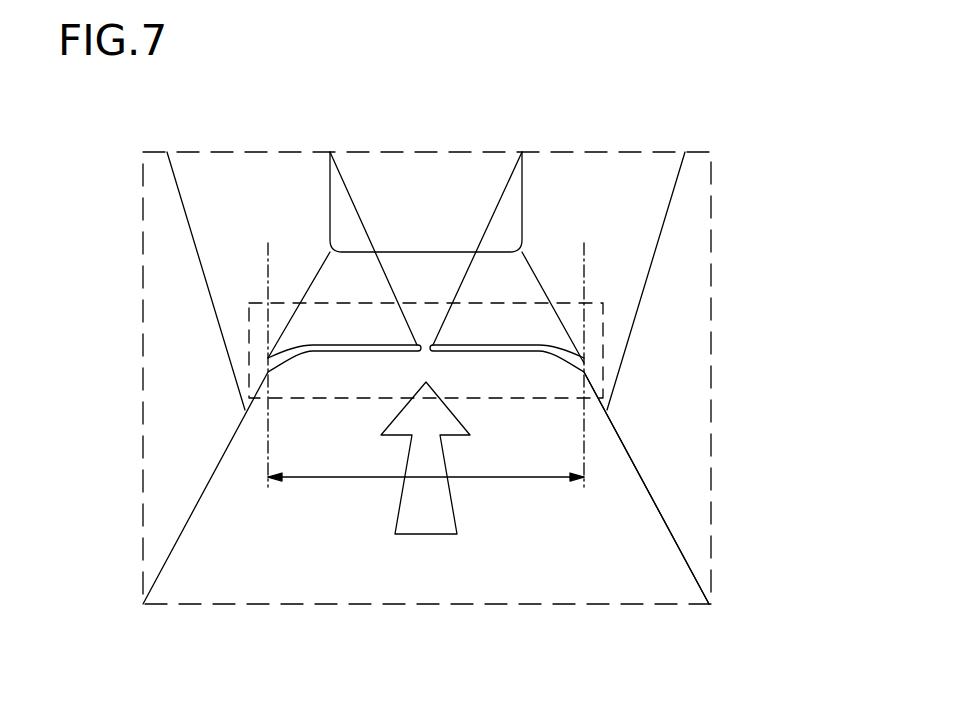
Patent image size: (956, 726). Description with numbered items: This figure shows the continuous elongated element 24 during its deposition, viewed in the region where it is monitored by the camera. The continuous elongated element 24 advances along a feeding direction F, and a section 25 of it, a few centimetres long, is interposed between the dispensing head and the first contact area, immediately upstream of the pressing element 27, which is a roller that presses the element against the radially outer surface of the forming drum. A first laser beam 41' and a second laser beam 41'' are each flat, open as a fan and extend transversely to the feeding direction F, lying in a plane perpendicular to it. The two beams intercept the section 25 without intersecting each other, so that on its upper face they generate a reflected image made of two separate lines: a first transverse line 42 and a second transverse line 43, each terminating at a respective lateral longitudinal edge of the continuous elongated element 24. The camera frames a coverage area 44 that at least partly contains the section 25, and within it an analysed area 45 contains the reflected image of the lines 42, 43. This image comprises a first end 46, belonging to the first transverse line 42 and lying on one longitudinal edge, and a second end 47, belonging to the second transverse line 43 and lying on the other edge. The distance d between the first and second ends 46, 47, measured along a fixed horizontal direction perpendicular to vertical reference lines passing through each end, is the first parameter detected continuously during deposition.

The continuous elongated element 24 is at (660, 466).
The section 25 is at (628, 545).
The pressing element 27 is at (512, 202).
The first laser beam 41' is at (141, 294).
The second laser beam 41'' is at (735, 281).
The first transverse line 42 is at (342, 345).
The second transverse line 43 is at (527, 343).
The coverage area 44 is at (712, 553).
The analysed area 45 is at (603, 350).
The first end 46 is at (268, 357).
The second end 47 is at (584, 363).
The distance d is at (372, 477).
The feeding direction F is at (455, 507).